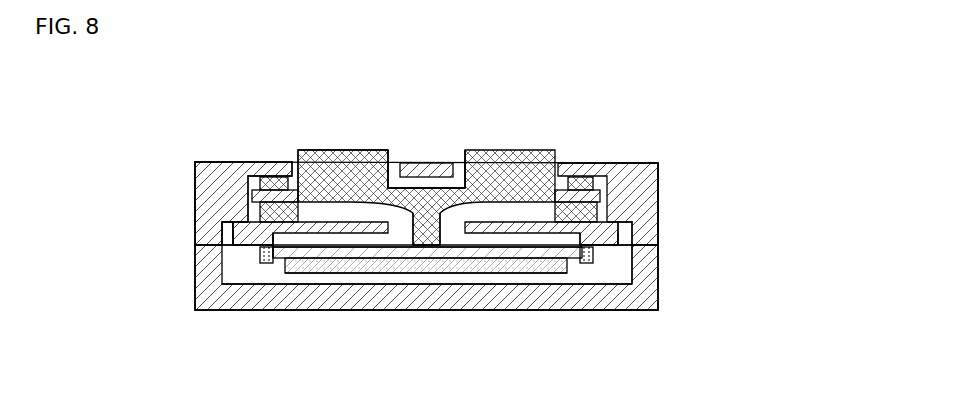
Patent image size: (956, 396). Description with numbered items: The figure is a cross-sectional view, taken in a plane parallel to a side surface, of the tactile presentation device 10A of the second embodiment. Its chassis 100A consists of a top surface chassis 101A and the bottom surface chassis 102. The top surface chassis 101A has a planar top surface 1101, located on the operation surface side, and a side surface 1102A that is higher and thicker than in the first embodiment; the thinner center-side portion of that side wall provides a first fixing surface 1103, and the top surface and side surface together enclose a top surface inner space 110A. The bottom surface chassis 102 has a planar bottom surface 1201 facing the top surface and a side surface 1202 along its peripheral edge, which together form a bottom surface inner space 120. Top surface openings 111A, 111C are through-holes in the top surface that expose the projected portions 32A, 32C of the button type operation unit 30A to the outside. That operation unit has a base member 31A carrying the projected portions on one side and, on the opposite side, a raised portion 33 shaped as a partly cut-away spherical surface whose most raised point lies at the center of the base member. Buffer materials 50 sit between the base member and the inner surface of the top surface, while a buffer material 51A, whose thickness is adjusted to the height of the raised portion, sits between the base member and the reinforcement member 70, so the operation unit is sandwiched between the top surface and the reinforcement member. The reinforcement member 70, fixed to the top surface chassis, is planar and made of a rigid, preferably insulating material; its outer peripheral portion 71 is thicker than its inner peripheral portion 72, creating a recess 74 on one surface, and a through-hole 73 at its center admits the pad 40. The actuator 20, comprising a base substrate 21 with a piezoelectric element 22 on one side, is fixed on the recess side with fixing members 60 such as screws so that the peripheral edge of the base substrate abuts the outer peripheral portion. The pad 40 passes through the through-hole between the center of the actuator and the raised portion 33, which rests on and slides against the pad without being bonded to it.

The tactile presentation device 10A is at (697, 40).
The chassis 100A is at (678, 210).
The bottom surface chassis 102 is at (676, 316).
The bottom surface 1201 is at (640, 300).
The side surface 1202 is at (643, 283).
The top surface inner space 110A is at (302, 186).
The top surface 1101 is at (640, 153).
The side surface 1102A is at (659, 183).
The first fixing surface 1103 is at (205, 227).
The top surface chassis 101A is at (676, 158).
The button type operation unit 30A is at (551, 133).
The base member 31A is at (327, 150).
The projected portion 32C is at (362, 150).
The projected portion 32A is at (517, 150).
The raised portion 33 is at (468, 176).
The top surface opening 111C is at (400, 143).
The top surface opening 111A is at (452, 140).
The pad 40 is at (432, 246).
The buffer material 50 is at (270, 192).
The buffer material 51A is at (262, 180).
The reinforcement member 70 is at (217, 257).
The outer peripheral portion 71 is at (222, 237).
The inner peripheral portion 72 is at (226, 264).
The through-hole 73 is at (465, 236).
The recess 74 is at (302, 265).
The fixing member 60 is at (265, 265).
The actuator 20 is at (427, 314).
The base substrate 21 is at (347, 275).
The piezoelectric element 22 is at (320, 262).
The bottom surface inner space 120 is at (541, 297).